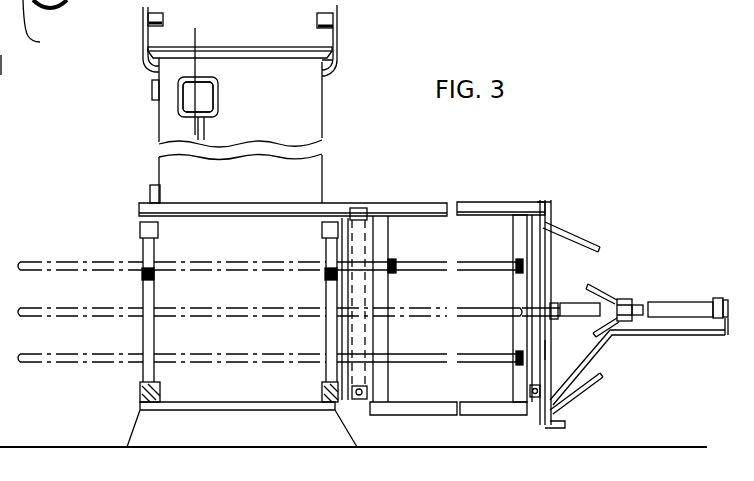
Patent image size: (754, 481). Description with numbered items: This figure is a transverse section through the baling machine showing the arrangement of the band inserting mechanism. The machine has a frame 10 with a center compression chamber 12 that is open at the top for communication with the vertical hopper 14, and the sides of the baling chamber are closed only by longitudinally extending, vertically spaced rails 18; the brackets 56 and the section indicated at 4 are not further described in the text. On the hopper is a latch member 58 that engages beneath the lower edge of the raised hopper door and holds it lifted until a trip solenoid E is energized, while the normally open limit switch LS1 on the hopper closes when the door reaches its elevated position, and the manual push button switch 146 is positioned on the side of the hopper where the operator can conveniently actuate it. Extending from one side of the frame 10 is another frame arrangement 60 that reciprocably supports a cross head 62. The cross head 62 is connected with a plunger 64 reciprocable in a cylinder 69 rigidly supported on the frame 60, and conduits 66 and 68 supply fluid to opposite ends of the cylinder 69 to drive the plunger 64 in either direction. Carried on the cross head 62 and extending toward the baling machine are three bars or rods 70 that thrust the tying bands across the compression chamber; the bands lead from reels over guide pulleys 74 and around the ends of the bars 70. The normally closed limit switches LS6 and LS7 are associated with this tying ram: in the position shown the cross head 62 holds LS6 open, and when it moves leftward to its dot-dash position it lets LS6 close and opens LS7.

The frame 10 is at (140, 403).
The center compression chamber 12 is at (236, 249).
The vertical hopper 14 is at (322, 118).
The rails 18 is at (158, 335).
The hanger brackets 56 is at (337, 30).
The latch member 58 is at (206, 122).
The frame arrangement 60 is at (507, 202).
The cross head 62 is at (363, 215).
The plunger 64 is at (540, 302).
The conduit 66 is at (551, 348).
The conduit 68 is at (600, 354).
The cylinder 69 is at (653, 303).
The bars or rods 70 is at (412, 242).
The guide pulleys 74 is at (44, 28).
The push button switch 146 is at (147, 192).
The section line 4 is at (195, 28).
The trip solenoid E is at (208, 97).
The limit switch LS1 is at (152, 86).
The limit switch LS6 is at (537, 400).
The limit switch LS7 is at (350, 408).